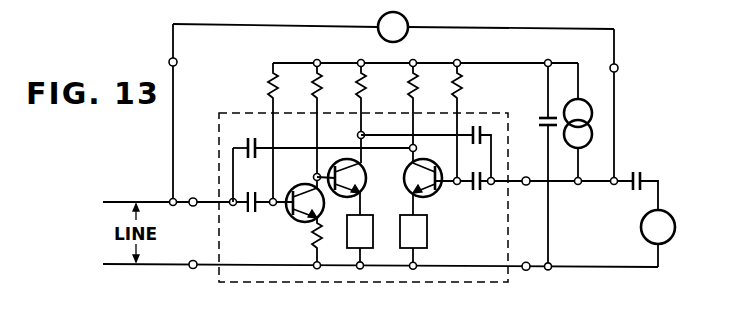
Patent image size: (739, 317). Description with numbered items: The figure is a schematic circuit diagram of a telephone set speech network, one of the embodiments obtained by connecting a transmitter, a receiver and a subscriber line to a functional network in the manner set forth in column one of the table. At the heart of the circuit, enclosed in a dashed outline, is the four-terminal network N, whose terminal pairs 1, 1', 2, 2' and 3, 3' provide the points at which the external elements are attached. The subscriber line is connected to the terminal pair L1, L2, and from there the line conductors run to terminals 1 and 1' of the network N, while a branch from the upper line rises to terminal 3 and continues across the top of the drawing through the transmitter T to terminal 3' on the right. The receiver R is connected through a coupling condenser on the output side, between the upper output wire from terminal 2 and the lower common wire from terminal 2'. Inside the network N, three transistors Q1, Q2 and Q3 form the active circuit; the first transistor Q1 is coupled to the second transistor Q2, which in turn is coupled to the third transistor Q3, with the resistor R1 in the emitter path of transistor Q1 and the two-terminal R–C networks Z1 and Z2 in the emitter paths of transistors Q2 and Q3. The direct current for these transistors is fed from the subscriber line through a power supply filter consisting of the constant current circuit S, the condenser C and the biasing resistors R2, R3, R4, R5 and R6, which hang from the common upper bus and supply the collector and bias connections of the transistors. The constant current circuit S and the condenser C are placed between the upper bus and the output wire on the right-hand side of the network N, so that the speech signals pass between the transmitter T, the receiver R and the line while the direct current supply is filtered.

The terminal 1 is at (194, 192).
The terminal 1' is at (195, 279).
The terminal 2 is at (526, 170).
The terminal 2' is at (527, 282).
The terminal 3 is at (181, 113).
The terminal 3' is at (625, 105).
The four-terminal network N is at (258, 111).
The transmitter T is at (393, 27).
The receiver R is at (654, 219).
The condenser C is at (538, 119).
The constant current circuit S is at (591, 117).
The terminal L1 is at (186, 200).
The terminal L2 is at (369, 272).
The resistor R1 is at (310, 244).
The biasing resistor R2 is at (290, 99).
The biasing resistor R3 is at (334, 99).
The biasing resistor R4 is at (378, 99).
The biasing resistor R5 is at (430, 99).
The biasing resistor R6 is at (474, 99).
The transistor Q1 is at (292, 192).
The transistor Q2 is at (364, 181).
The transistor Q3 is at (430, 194).
The two-terminal R–C network Z1 is at (360, 242).
The two-terminal R–C network Z2 is at (413, 242).